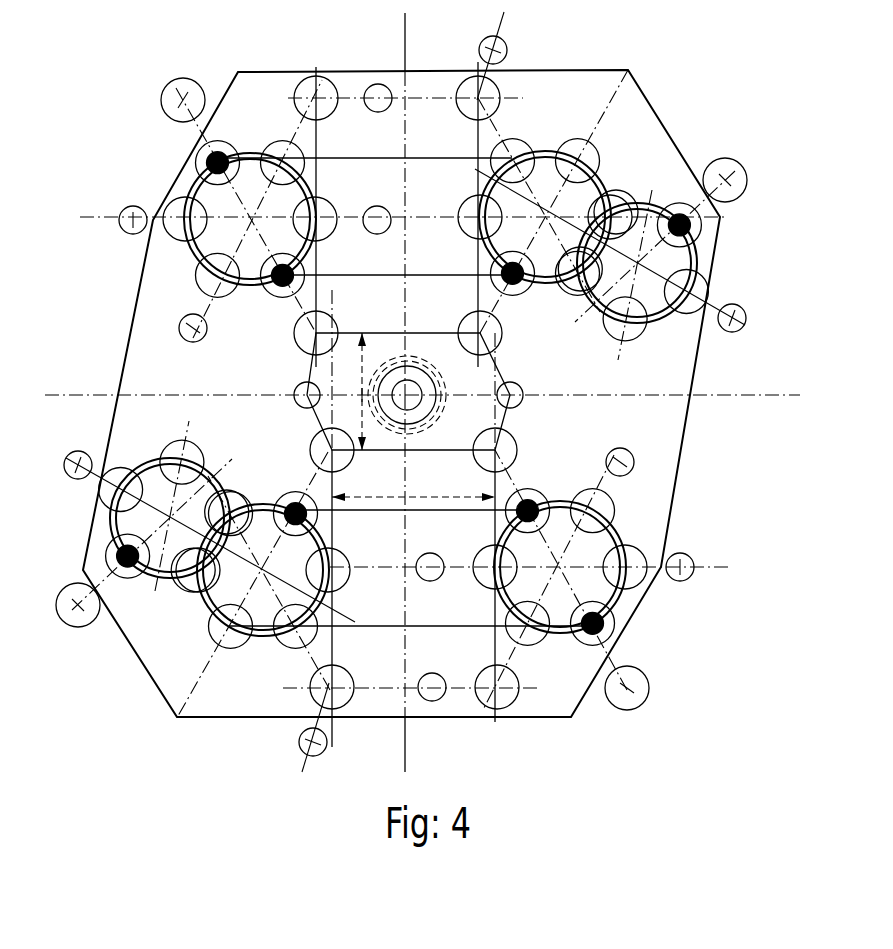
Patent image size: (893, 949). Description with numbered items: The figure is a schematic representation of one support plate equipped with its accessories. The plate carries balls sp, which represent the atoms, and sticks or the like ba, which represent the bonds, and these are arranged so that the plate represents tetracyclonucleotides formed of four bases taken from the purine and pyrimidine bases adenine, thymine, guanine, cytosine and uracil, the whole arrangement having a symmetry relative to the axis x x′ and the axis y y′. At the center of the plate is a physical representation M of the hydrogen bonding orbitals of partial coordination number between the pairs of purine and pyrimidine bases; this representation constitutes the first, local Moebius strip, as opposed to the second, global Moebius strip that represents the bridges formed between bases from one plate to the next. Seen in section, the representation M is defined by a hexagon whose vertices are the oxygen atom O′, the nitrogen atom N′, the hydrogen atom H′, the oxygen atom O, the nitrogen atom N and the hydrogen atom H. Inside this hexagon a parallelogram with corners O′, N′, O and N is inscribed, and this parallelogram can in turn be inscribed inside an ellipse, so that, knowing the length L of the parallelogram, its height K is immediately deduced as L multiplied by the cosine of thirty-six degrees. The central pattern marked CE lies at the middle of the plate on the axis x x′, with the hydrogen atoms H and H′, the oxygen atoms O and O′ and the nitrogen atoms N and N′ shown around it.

The balls sp is at (223, 142).
The sticks ba is at (494, 304).
The oxygen atom O′ is at (329, 328).
The nitrogen atom N′ is at (493, 333).
The nitrogen atom N is at (321, 450).
The oxygen atom O is at (507, 450).
The hydrogen atom H is at (287, 396).
The hydrogen atom H′ is at (524, 396).
The height of the parallelogram K is at (350, 397).
The center of the structure CE is at (418, 400).
The physical representation of the hydrogen bonding orbitals M is at (393, 333).
The length of the parallelogram L is at (413, 486).
The axis xx' x is at (225, 388).
The axis xx' x′ is at (602, 384).
The axis yy' y is at (416, 583).
The axis yy' y′ is at (416, 203).